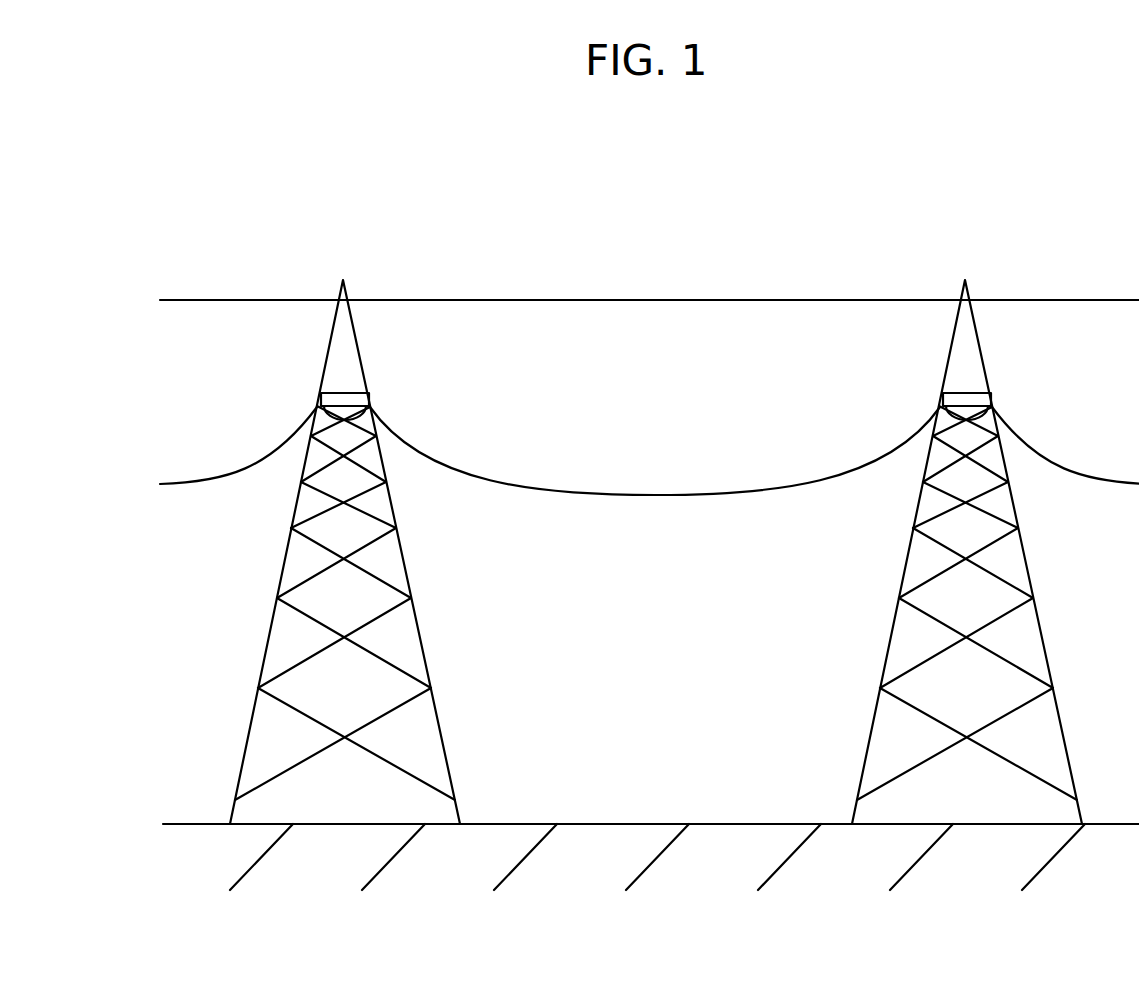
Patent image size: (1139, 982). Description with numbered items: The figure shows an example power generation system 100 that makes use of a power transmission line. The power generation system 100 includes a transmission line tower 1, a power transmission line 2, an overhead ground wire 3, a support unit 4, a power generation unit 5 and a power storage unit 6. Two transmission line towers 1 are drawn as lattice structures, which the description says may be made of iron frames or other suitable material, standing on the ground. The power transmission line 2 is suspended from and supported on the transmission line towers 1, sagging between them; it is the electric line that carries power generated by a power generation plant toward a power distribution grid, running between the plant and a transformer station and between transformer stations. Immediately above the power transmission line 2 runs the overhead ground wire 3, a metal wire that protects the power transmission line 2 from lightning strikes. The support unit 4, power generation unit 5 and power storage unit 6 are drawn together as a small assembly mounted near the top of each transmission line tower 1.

The power generation system 100 is at (377, 275).
The transmission line tower 1 is at (427, 660).
The power transmission line 2 is at (694, 495).
The overhead ground wire 3 is at (688, 300).
The support unit 4 is at (353, 398).
The power generation unit 5 is at (656, 406).
The power storage unit 6 is at (656, 406).